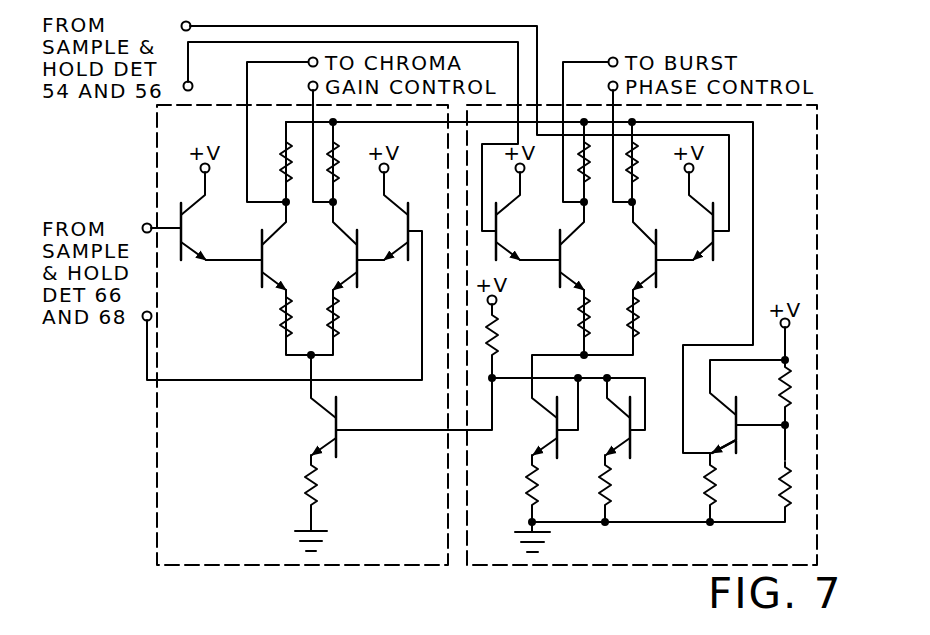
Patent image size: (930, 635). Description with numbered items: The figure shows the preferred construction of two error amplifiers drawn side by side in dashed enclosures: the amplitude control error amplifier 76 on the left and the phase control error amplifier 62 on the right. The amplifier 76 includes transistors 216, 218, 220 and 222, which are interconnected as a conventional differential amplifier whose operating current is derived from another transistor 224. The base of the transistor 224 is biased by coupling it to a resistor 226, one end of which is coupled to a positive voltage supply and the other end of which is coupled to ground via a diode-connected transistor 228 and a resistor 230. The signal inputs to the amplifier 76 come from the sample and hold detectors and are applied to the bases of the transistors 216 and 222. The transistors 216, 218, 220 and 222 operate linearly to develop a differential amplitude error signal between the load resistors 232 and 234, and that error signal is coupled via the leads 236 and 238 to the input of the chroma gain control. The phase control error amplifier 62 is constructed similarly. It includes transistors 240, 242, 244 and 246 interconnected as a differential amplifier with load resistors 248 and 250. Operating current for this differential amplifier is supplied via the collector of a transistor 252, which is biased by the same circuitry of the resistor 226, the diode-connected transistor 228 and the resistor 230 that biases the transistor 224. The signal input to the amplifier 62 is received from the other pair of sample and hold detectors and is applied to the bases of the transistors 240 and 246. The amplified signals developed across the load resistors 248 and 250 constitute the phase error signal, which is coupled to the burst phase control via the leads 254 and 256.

The phase control error amplifier 62 is at (467, 457).
The amplitude control error amplifier 76 is at (157, 439).
The transistor 216 is at (192, 232).
The transistor 218 is at (270, 260).
The transistor 220 is at (356, 262).
The transistor 222 is at (400, 228).
The transistor 224 is at (330, 431).
The resistor 226 is at (496, 342).
The diode-connected transistor 228 is at (630, 425).
The resistor 230 is at (608, 490).
The load resistor 232 is at (280, 160).
The load resistor 234 is at (338, 162).
The lead 236 is at (284, 66).
The lead 238 is at (312, 98).
The transistor 240 is at (500, 255).
The transistor 242 is at (566, 258).
The transistor 244 is at (650, 261).
The transistor 246 is at (708, 228).
The load resistor 248 is at (579, 170).
The load resistor 250 is at (634, 172).
The transistor 252 is at (550, 425).
The lead 254 is at (573, 62).
The lead 256 is at (613, 98).